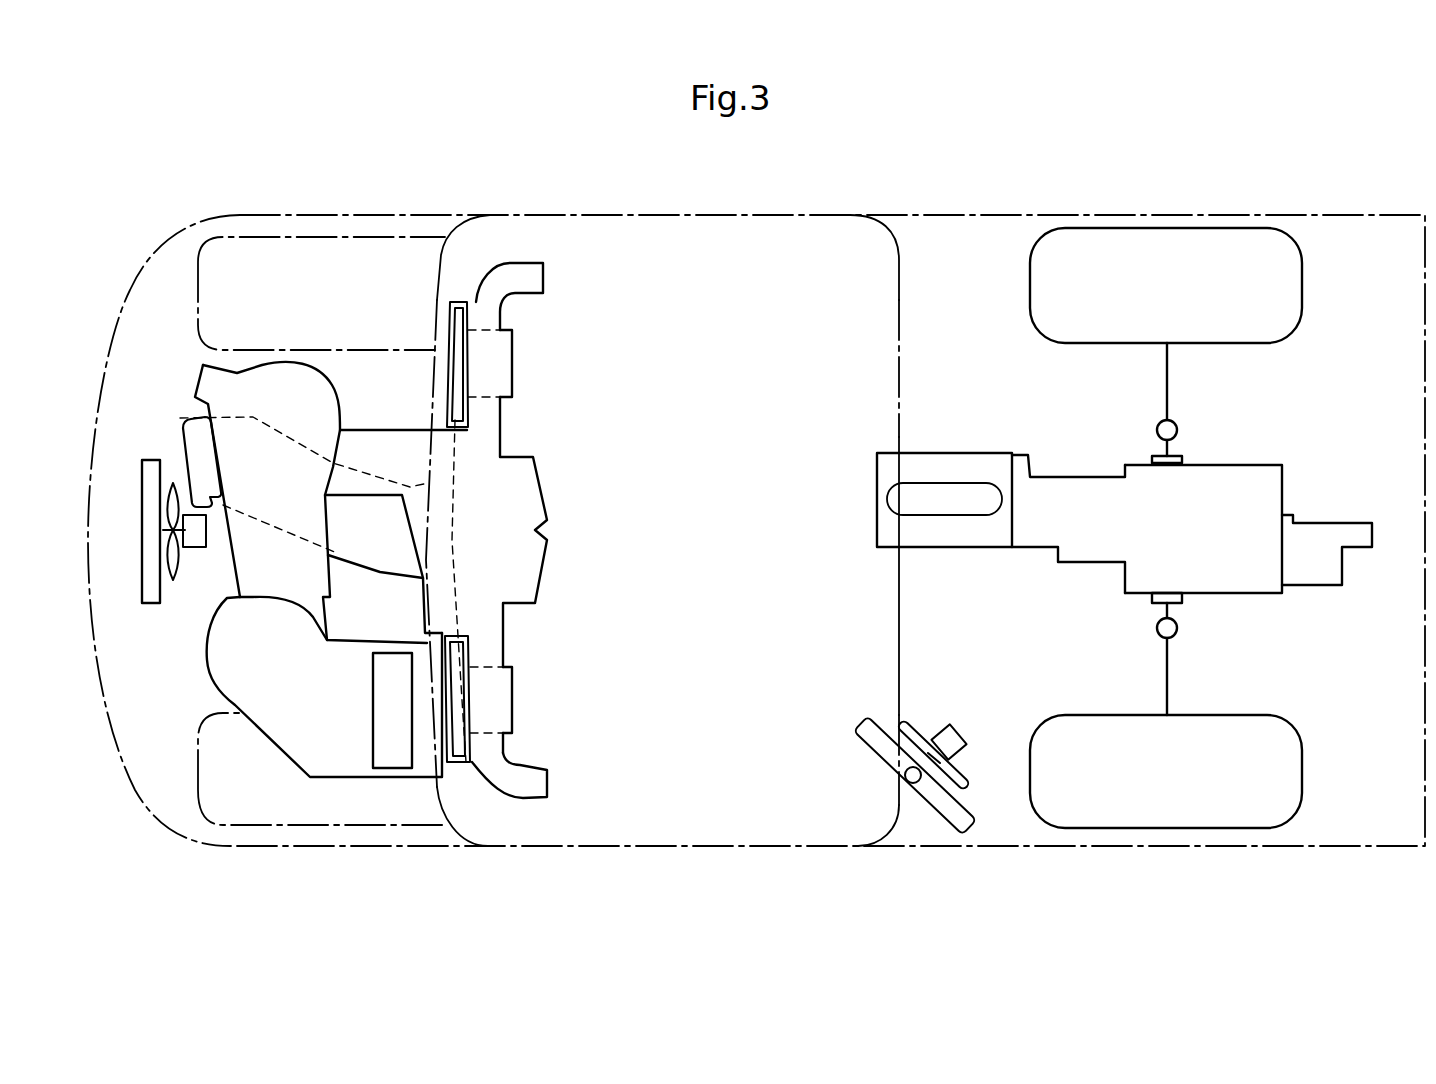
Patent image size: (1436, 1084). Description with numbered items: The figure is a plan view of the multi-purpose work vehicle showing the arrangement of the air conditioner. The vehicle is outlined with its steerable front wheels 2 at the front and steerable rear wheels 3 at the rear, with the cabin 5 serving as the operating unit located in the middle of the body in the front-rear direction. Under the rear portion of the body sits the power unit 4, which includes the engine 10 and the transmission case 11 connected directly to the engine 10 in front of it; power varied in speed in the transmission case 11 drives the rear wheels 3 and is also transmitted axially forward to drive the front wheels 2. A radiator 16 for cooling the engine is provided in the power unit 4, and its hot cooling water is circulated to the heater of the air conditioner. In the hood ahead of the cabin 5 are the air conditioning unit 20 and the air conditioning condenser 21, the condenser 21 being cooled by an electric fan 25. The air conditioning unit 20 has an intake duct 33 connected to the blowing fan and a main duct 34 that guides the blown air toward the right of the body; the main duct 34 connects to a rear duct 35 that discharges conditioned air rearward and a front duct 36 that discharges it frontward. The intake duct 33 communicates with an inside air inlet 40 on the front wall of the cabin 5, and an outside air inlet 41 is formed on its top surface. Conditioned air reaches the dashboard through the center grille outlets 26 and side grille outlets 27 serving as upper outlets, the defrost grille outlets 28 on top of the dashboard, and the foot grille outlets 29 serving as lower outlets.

The front wheels 2 is at (336, 237).
The rear wheels 3 is at (1203, 228).
The power unit 4 is at (1077, 580).
The cabin 5 is at (903, 339).
The engine 10 is at (877, 503).
The transmission case 11 is at (1240, 463).
The radiator 16 is at (877, 750).
The air conditioning unit 20 is at (280, 366).
The air conditioning condenser 21 is at (142, 597).
The electric fan 25 is at (173, 580).
The center grille outlets 26 is at (550, 493).
The side grille outlets 27 is at (545, 275).
The defrost grille outlets 28 is at (458, 407).
The foot grille outlets 29 is at (514, 363).
The intake duct 33 is at (268, 727).
The main duct 34 is at (340, 572).
The rear duct 35 is at (377, 432).
The front duct 36 is at (182, 440).
The inside air inlet 40 is at (449, 768).
The outside air inlet 41 is at (393, 750).